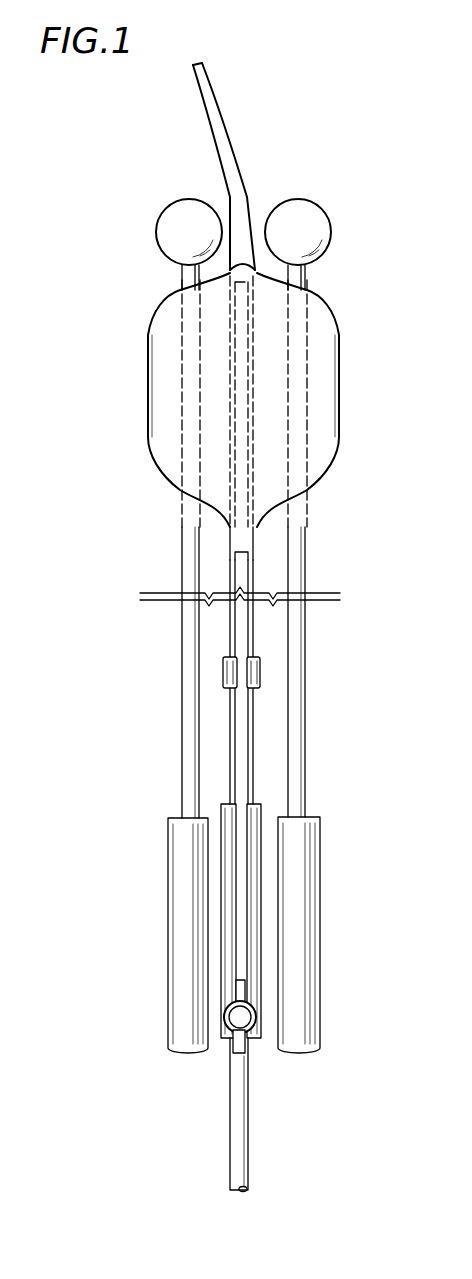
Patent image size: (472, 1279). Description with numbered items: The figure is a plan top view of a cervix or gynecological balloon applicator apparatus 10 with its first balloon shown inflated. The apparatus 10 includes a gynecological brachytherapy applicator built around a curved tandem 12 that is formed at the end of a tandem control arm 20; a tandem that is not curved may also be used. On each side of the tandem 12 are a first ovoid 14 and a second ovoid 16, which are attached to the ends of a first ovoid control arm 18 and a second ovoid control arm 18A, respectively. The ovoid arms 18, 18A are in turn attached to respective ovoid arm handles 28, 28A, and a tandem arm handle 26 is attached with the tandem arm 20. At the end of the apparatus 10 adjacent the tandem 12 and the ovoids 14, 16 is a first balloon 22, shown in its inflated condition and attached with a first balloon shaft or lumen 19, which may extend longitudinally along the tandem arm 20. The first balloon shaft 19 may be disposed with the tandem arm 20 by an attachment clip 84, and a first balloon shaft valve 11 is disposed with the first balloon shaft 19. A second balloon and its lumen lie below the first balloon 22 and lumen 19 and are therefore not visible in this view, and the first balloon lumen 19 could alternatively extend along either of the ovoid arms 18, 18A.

The gynecological balloon applicator apparatus 10 is at (114, 846).
The first balloon shaft valve 11 is at (225, 1038).
The curved tandem 12 is at (238, 148).
The first ovoid 14 is at (317, 197).
The second ovoid 16 is at (170, 205).
The first ovoid control arm 18 is at (306, 770).
The second ovoid control arm 18A is at (181, 773).
The first balloon shaft 19 is at (230, 570).
The tandem control arm 20 is at (253, 618).
The first balloon 22 is at (147, 392).
The tandem arm handle 26 is at (260, 890).
The ovoid arm handle 28 is at (320, 943).
The ovoid arm handle 28A is at (168, 932).
The attachment clip 84 is at (260, 672).